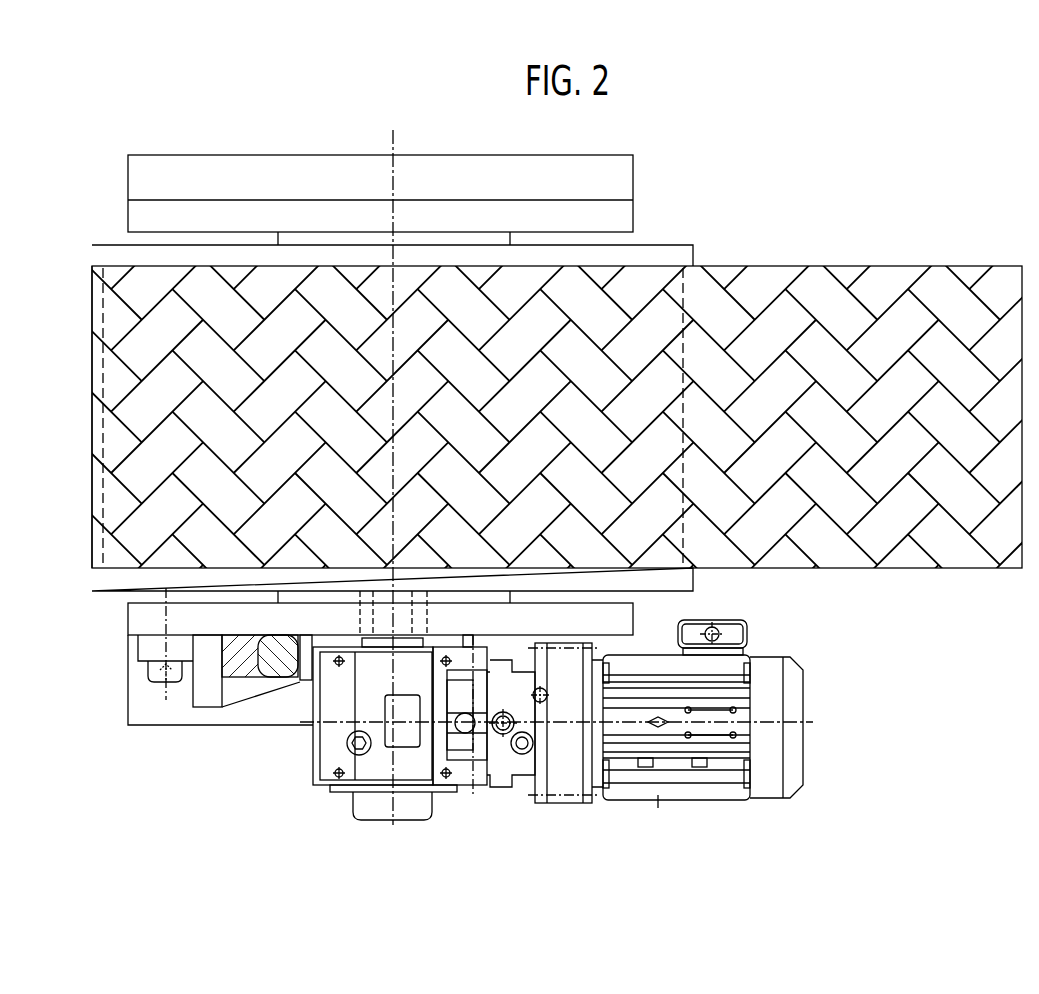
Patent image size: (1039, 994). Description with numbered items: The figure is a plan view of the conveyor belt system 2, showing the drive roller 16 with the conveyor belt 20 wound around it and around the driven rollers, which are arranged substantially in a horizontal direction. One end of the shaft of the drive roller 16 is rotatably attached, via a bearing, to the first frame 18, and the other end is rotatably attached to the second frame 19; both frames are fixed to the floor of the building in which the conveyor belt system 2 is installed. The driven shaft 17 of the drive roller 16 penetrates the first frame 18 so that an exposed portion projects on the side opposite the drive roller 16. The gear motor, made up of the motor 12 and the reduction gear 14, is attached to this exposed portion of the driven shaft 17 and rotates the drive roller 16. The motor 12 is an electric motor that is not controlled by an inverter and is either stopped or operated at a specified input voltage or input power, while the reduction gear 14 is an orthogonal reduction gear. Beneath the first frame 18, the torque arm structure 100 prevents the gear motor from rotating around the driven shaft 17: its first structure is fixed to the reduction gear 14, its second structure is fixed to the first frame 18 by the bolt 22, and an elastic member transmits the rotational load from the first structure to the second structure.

The conveyor belt system 2 is at (40, 342).
The motor 12 is at (688, 780).
The reduction gear 14 is at (412, 770).
The drive roller 16 is at (108, 255).
The driven shaft 17 is at (425, 598).
The first frame 18 is at (138, 618).
The second frame 19 is at (617, 217).
The conveyor belt 20 is at (817, 275).
The bolt 22 is at (148, 668).
The torque arm structure 100 is at (212, 724).